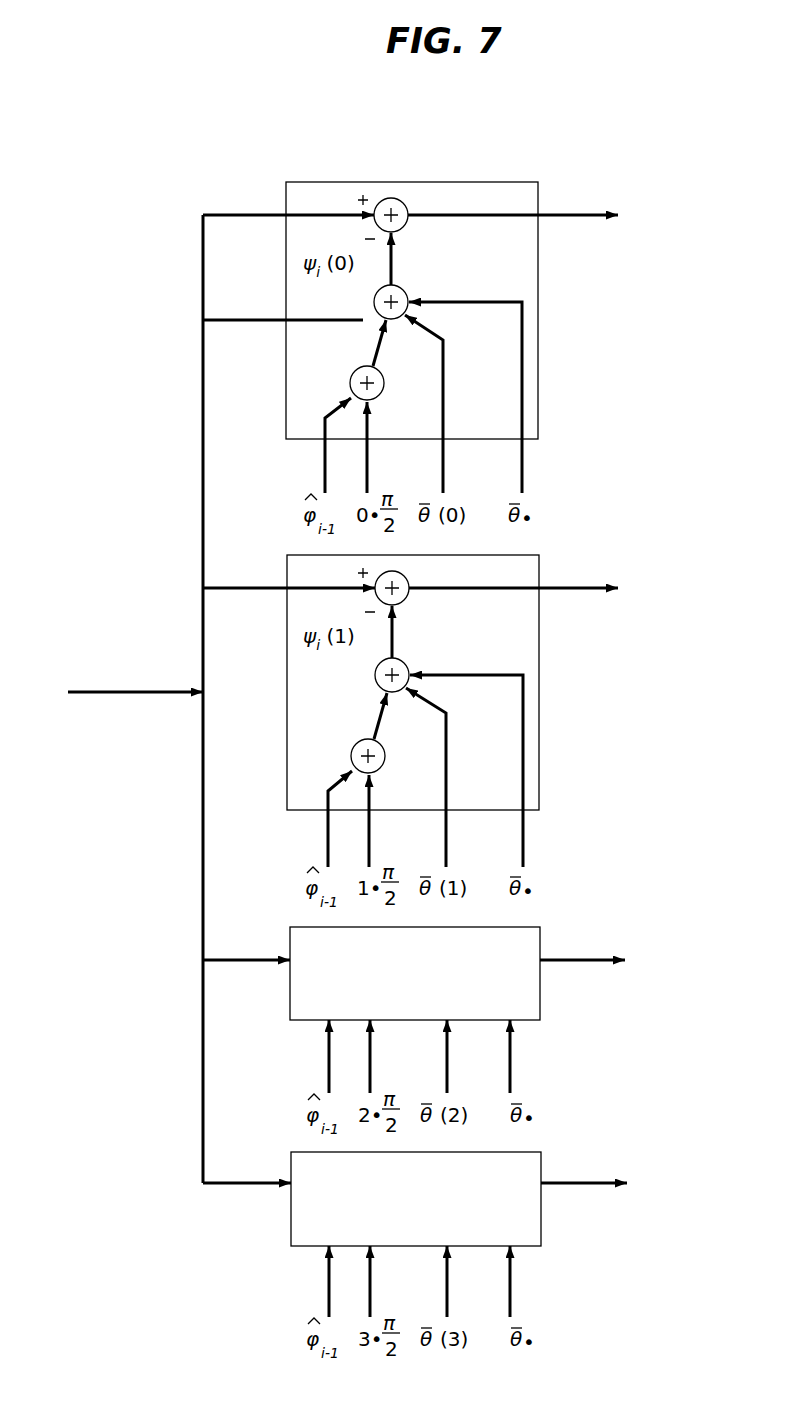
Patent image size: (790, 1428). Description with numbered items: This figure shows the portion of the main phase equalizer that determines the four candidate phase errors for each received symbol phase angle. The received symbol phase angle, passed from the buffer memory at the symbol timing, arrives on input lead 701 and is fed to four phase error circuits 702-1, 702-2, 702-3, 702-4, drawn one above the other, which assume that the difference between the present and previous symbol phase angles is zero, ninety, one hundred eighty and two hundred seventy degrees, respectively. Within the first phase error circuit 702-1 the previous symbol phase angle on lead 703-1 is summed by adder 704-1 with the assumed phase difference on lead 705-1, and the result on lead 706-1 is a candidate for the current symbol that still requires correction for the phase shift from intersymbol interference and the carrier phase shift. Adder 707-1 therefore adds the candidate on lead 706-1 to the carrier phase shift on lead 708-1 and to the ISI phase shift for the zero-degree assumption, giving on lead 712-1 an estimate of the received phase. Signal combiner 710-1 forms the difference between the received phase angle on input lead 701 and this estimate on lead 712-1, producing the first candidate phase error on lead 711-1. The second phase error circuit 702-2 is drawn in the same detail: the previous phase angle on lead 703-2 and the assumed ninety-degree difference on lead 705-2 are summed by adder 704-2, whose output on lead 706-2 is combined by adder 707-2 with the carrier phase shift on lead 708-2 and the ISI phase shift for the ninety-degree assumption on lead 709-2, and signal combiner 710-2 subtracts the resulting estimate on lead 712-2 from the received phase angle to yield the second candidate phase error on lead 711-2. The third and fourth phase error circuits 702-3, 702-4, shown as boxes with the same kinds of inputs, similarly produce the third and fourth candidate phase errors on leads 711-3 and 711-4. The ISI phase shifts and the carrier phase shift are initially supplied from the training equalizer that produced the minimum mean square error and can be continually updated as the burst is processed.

The input lead 701 is at (137, 696).
The phase error circuit 702-1 is at (482, 182).
The phase error circuit 702-2 is at (540, 700).
The phase error circuit 702-3 is at (290, 993).
The phase error circuit 702-4 is at (290, 1222).
The lead 703-1 is at (322, 472).
The lead 703-2 is at (323, 845).
The adder 704-1 is at (412, 373).
The adder 704-2 is at (413, 746).
The lead 705-1 is at (409, 473).
The lead 705-2 is at (411, 846).
The lead 706-1 is at (372, 352).
The lead 706-2 is at (373, 725).
The adder 707-1 is at (405, 290).
The adder 707-2 is at (406, 663).
The lead 708-1 is at (525, 475).
The lead 708-2 is at (526, 848).
The lead 709-2 is at (486, 847).
The signal combiner 710-1 is at (405, 203).
The signal combiner 710-2 is at (406, 576).
The lead 711-1 is at (587, 215).
The lead 711-2 is at (590, 588).
The lead 711-3 is at (576, 958).
The lead 711-4 is at (576, 1183).
The lead 712-1 is at (398, 263).
The lead 712-2 is at (399, 636).